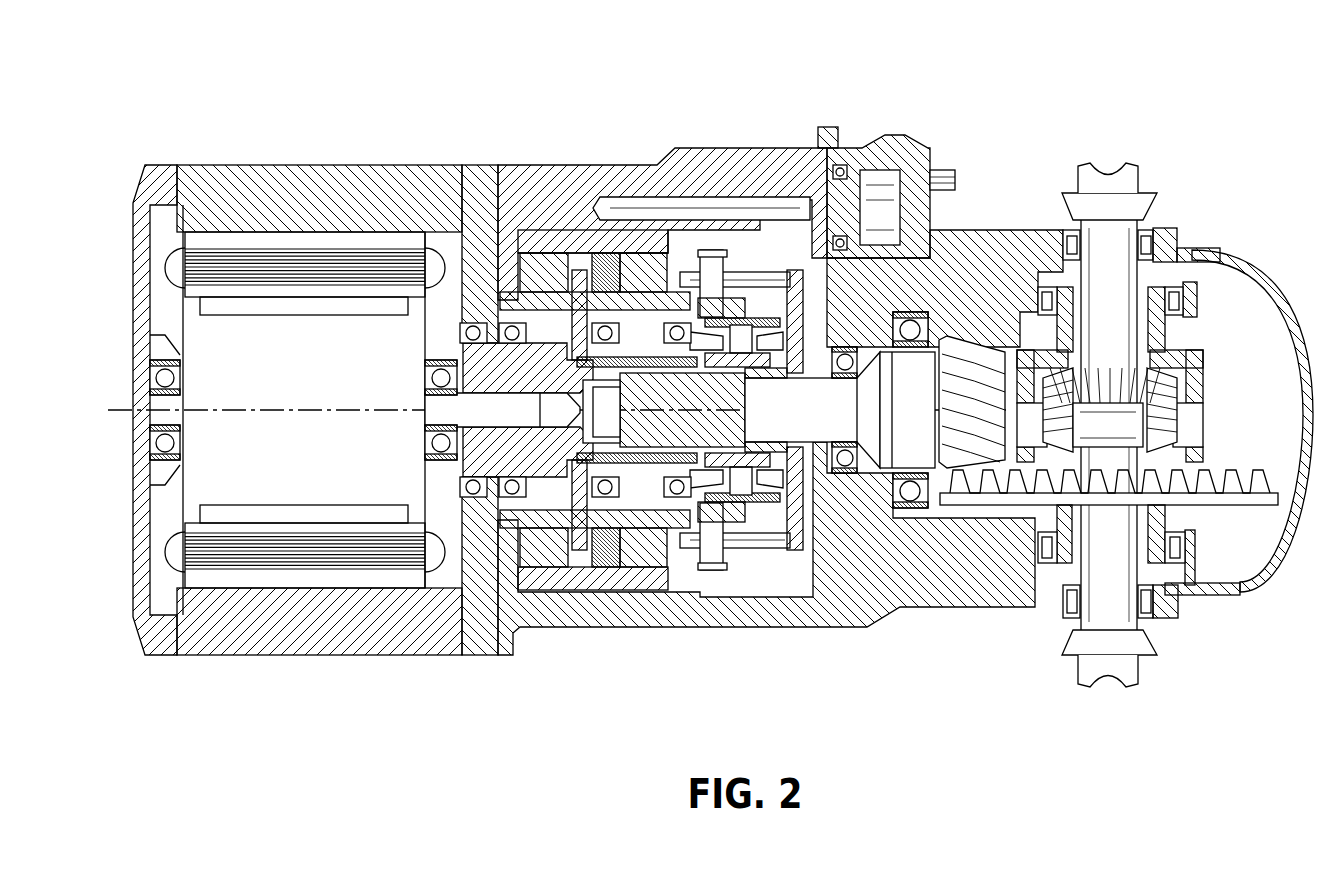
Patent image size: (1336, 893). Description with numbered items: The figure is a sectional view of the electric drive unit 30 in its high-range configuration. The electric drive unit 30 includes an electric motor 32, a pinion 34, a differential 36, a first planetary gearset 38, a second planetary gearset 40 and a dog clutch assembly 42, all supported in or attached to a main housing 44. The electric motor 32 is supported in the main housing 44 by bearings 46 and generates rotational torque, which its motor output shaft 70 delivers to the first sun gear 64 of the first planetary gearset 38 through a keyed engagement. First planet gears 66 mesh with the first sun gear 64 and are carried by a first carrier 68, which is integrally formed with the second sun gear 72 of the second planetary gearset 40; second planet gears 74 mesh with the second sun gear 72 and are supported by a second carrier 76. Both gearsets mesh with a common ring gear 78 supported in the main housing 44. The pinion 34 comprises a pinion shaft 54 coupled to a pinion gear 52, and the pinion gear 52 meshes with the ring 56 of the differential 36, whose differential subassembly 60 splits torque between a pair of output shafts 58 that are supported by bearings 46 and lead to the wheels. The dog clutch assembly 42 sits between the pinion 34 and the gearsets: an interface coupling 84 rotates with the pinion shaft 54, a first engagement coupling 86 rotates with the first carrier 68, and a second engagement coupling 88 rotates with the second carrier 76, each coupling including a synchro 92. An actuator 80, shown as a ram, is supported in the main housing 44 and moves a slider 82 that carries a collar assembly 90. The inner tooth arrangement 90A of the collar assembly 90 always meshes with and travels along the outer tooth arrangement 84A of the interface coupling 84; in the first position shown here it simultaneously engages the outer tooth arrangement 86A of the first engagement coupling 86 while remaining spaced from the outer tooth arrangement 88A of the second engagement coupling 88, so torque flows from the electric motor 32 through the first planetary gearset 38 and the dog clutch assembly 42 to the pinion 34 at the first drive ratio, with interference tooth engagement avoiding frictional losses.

The electric drive unit 30 is at (262, 128).
The electric motor 32 is at (320, 345).
The pinion 34 is at (968, 382).
The differential 36 is at (1218, 370).
The first planetary gearset 38 is at (511, 263).
The second planetary gearset 40 is at (607, 266).
The dog clutch assembly 42 is at (748, 165).
The main housing 44 is at (660, 290).
The bearings 46 is at (172, 443).
The pinion gear 52 is at (911, 372).
The pinion shaft 54 is at (790, 350).
The ring 56 is at (1231, 498).
The output shafts 58 is at (1133, 172).
The differential subassembly 60 is at (1207, 413).
The first sun gear 64 is at (441, 330).
The first planet gears 66 is at (540, 290).
The first carrier 68 is at (578, 268).
The motor output shaft 70 is at (510, 405).
The second sun gear 72 is at (640, 300).
The second planet gears 74 is at (680, 300).
The second carrier 76 is at (702, 308).
The common ring gear 78 is at (582, 568).
The actuator 80 is at (852, 150).
The slider 82 is at (746, 301).
The interface coupling 84 is at (736, 460).
The outer tooth arrangement 84A is at (763, 523).
The first engagement coupling 86 is at (703, 512).
The outer tooth arrangement 86A is at (693, 474).
The second engagement coupling 88 is at (865, 203).
The outer tooth arrangement 88A is at (785, 568).
The collar assembly 90 is at (738, 519).
The inner tooth arrangement 90A is at (768, 333).
The synchro 92 is at (746, 325).